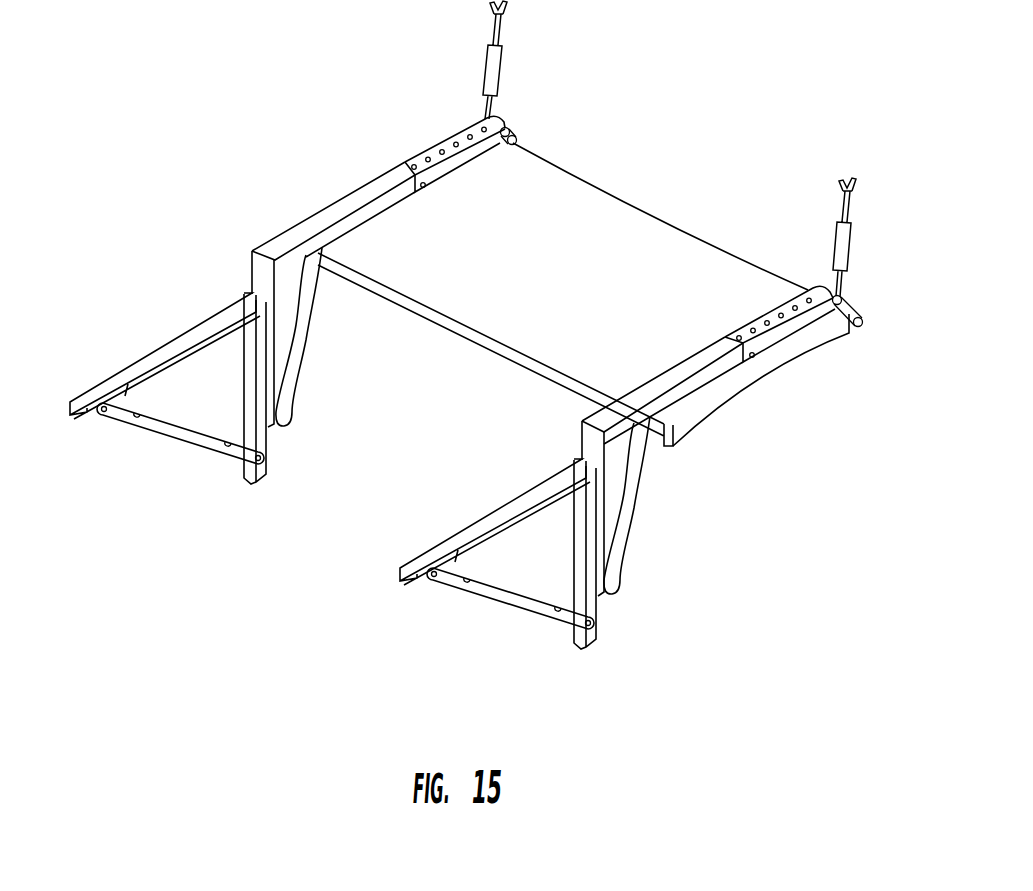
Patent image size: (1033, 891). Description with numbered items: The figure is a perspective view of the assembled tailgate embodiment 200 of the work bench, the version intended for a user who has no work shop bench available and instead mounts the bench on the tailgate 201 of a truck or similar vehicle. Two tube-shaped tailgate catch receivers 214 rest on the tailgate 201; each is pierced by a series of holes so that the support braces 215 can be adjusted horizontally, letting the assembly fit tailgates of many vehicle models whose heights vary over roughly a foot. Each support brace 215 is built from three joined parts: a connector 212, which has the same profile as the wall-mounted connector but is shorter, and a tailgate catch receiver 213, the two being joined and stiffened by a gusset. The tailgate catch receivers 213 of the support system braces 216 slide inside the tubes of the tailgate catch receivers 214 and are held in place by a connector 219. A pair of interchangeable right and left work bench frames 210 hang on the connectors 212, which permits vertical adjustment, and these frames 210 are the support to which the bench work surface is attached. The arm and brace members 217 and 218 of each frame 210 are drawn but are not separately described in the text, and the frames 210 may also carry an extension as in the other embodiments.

The tailgate embodiment 200 is at (649, 115).
The tailgate 201 is at (652, 211).
The work bench frame 210 is at (153, 337).
The connector 212 is at (294, 320).
The tailgate catch receiver 213 is at (357, 219).
The tailgate catch receiver 214 is at (400, 156).
The support brace 215 is at (248, 236).
The support system brace 216 is at (272, 445).
The bracket arm 217 is at (215, 313).
The bracket brace 218 is at (160, 438).
The connector 219 is at (487, 70).